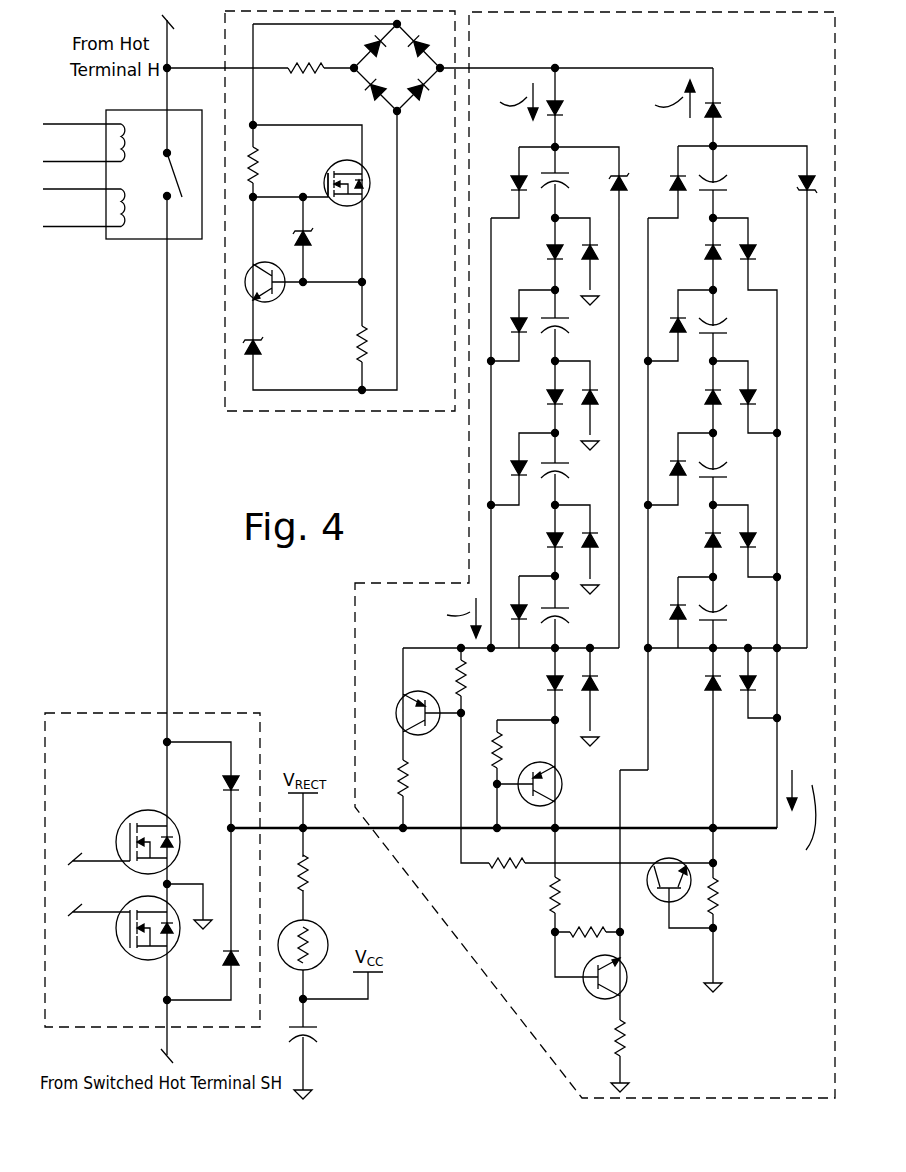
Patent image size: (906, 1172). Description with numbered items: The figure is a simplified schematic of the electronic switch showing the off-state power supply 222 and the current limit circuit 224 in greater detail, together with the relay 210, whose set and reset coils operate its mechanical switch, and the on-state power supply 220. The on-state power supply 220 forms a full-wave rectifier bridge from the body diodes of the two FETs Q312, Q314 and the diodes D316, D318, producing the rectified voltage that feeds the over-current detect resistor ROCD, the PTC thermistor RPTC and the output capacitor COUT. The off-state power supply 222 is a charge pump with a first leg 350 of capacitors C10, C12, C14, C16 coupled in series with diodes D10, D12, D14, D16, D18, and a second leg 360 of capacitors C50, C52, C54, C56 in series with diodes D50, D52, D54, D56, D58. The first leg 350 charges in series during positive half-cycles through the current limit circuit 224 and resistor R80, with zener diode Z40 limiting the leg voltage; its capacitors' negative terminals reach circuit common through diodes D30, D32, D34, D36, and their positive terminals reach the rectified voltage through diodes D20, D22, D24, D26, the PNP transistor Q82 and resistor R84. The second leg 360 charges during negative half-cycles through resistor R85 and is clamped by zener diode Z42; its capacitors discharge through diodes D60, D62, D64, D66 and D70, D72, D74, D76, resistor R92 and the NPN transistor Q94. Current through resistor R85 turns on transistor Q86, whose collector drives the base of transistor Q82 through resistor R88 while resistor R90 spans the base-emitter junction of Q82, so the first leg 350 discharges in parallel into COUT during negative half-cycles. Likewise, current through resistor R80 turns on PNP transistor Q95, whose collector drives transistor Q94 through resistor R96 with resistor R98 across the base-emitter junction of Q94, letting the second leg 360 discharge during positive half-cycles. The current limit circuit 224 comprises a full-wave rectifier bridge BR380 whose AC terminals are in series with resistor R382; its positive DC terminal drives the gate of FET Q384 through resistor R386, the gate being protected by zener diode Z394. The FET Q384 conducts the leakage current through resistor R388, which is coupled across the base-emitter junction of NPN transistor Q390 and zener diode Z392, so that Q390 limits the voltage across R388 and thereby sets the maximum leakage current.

The relay 210 is at (160, 232).
The on-state power supply 220 is at (107, 712).
The off-state power supply 222 is at (353, 698).
The current limit circuit 224 is at (340, 235).
The first leg 350 is at (583, 56).
The second leg 360 is at (741, 56).
The full-wave rectifier bridge BR380 is at (362, 107).
The resistor R382 is at (290, 60).
The resistor R386 is at (268, 165).
The FET Q384 is at (330, 160).
The zener diode Z394 is at (335, 236).
The NPN bipolar junction transistor Q390 is at (277, 296).
The resistor R388 is at (355, 338).
The zener diode Z392 is at (262, 352).
The diode D10 is at (567, 108).
The diode D12 is at (547, 255).
The diode D14 is at (547, 399).
The diode D16 is at (547, 542).
The diode D18 is at (547, 685).
The diode D20 is at (512, 180).
The diode D22 is at (515, 318).
The diode D24 is at (515, 461).
The diode D26 is at (515, 605).
The diode D30 is at (597, 246).
The diode D32 is at (596, 390).
The diode D34 is at (596, 534).
The diode D36 is at (594, 686).
The capacitor C10 is at (572, 160).
The capacitor C12 is at (564, 318).
The capacitor C14 is at (564, 463).
The capacitor C16 is at (564, 608).
The zener diode Z40 is at (626, 183).
The zener diode Z42 is at (800, 178).
The diode D58 is at (725, 110).
The diode D56 is at (706, 252).
The diode D54 is at (706, 398).
The diode D52 is at (706, 542).
The diode D50 is at (706, 686).
The diode D76 is at (668, 177).
The diode D74 is at (668, 320).
The diode D72 is at (668, 464).
The diode D70 is at (668, 607).
The diode D66 is at (758, 252).
The diode D64 is at (752, 392).
The diode D62 is at (752, 535).
The diode D60 is at (742, 686).
The capacitor C56 is at (723, 191).
The capacitor C54 is at (722, 332).
The capacitor C52 is at (722, 476).
The capacitor C50 is at (722, 620).
The resistor R90 is at (470, 672).
The resistor R84 is at (411, 775).
The resistor R80 is at (506, 750).
The resistor R88 is at (522, 873).
The resistor R96 is at (550, 913).
The resistor R98 is at (587, 906).
The resistor R92 is at (632, 1032).
The resistor R85 is at (722, 898).
The PNP bipolar junction transistor Q82 is at (398, 705).
The PNP bipolar junction transistor Q95 is at (562, 787).
The NPN bipolar junction transistor Q94 is at (598, 997).
The NPN bipolar junction transistor Q86 is at (657, 898).
The FET Q312 is at (155, 810).
The FET Q314 is at (127, 952).
The diode D316 is at (222, 784).
The diode D318 is at (225, 950).
The over-current detect resistor ROCD is at (317, 877).
The PTC thermistor RPTC is at (327, 940).
The output capacitor COUT is at (310, 1018).